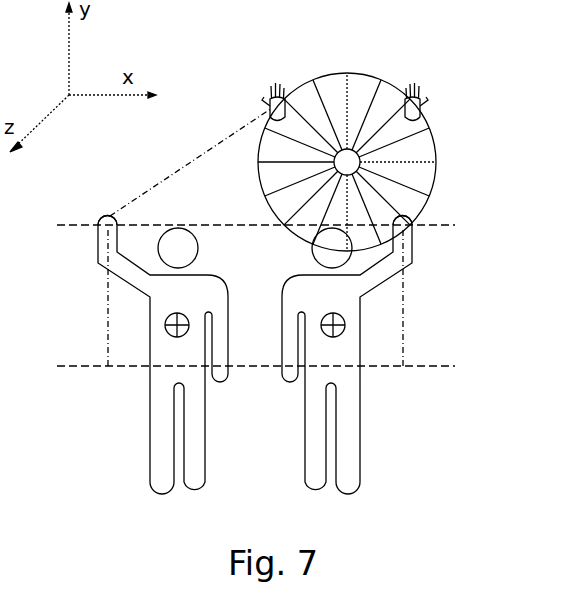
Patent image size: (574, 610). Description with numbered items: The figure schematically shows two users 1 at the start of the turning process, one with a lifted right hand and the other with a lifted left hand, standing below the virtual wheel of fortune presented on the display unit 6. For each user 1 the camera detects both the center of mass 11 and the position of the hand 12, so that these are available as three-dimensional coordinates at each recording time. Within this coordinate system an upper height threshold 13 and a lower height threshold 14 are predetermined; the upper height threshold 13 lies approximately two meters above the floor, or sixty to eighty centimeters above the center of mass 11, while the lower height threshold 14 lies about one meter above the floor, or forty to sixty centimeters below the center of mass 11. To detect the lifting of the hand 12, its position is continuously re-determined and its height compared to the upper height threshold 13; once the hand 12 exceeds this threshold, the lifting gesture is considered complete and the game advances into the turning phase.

The user 1 is at (352, 485).
The display unit 6 is at (388, 103).
The center of mass 11 is at (170, 339).
The hand 12 is at (104, 216).
The upper height threshold 13 is at (276, 226).
The lower height threshold 14 is at (276, 366).